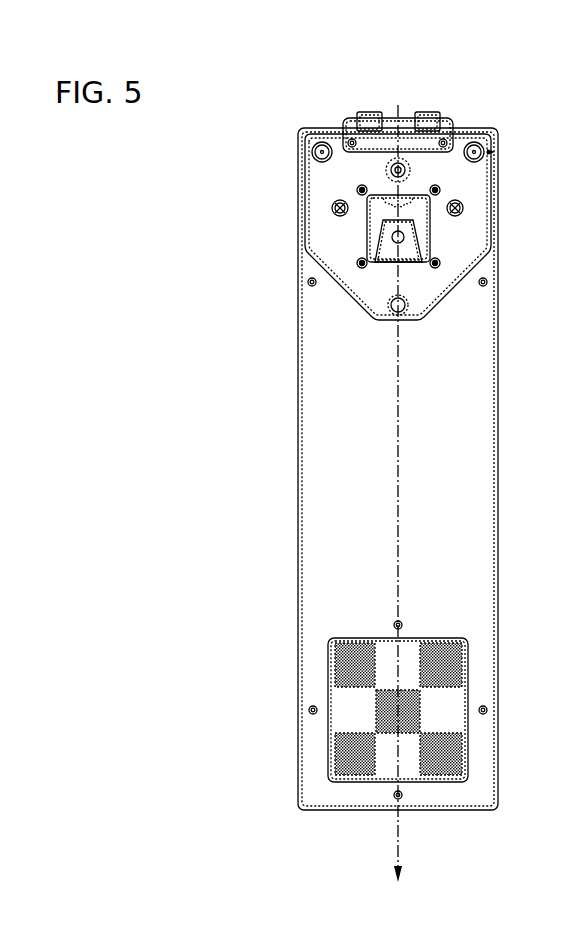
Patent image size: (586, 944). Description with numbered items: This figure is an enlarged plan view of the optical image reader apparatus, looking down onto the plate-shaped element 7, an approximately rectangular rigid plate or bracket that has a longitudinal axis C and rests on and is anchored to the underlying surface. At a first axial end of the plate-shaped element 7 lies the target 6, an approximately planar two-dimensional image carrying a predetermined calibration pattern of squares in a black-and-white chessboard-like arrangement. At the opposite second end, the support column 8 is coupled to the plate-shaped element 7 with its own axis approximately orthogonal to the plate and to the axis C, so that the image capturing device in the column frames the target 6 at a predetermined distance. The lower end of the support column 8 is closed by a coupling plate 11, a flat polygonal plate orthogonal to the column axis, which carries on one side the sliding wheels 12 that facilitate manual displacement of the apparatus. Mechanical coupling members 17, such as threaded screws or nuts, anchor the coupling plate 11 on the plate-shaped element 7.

The target 6 is at (340, 717).
The plate-shaped element 7 is at (445, 515).
The support column 8 is at (376, 213).
The coupling plate 11 is at (320, 211).
The sliding wheels 12 is at (366, 108).
The mechanical coupling members 17 is at (320, 140).
The longitudinal axis C is at (400, 820).